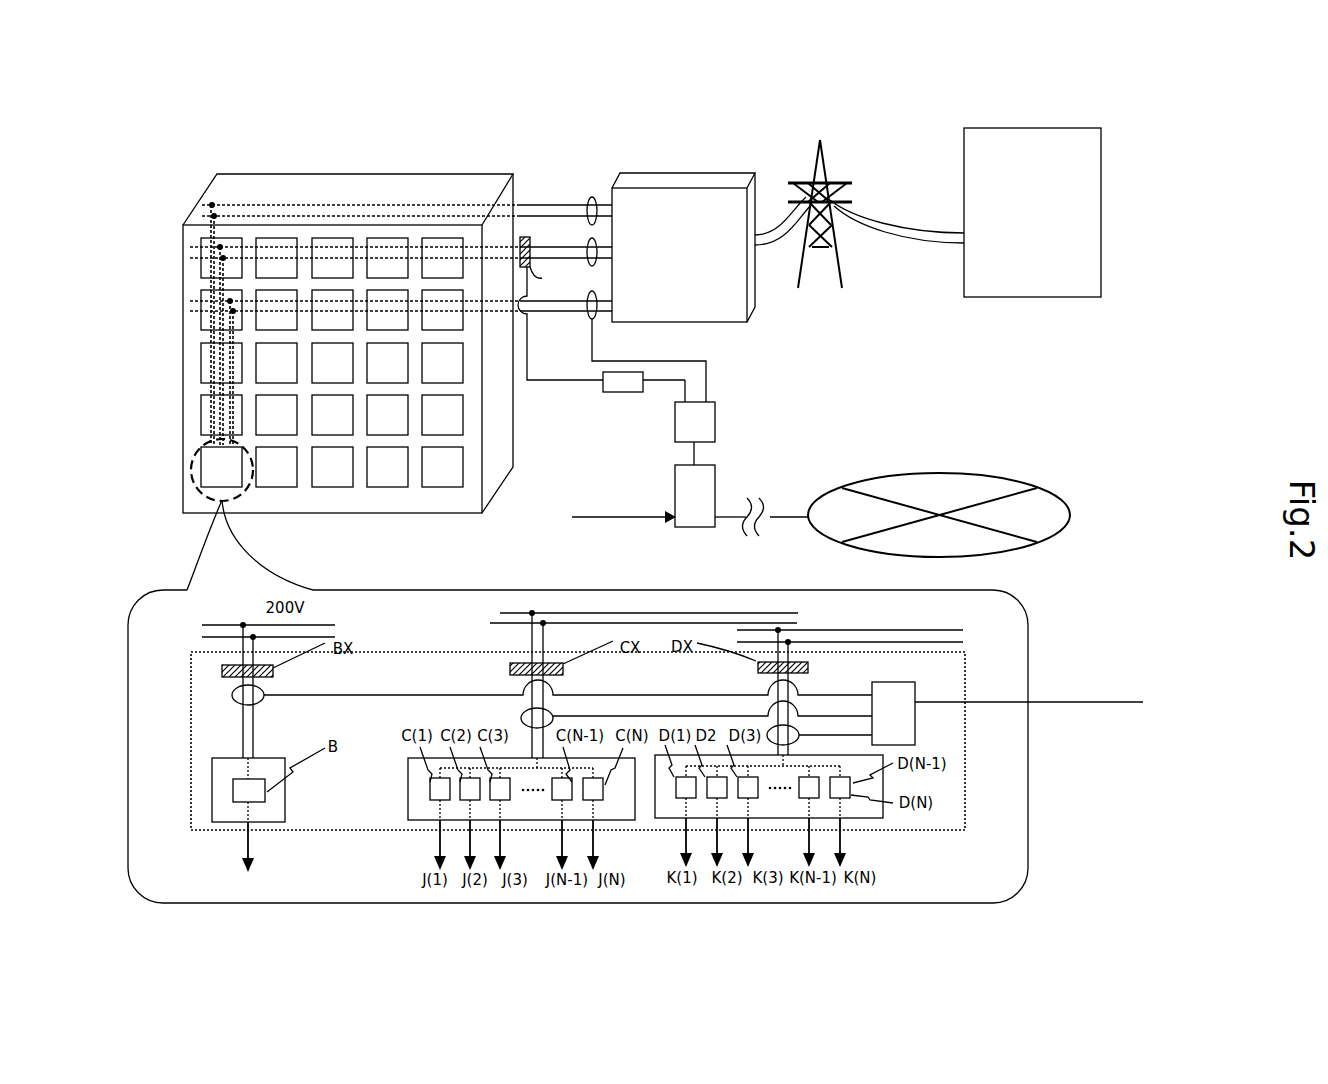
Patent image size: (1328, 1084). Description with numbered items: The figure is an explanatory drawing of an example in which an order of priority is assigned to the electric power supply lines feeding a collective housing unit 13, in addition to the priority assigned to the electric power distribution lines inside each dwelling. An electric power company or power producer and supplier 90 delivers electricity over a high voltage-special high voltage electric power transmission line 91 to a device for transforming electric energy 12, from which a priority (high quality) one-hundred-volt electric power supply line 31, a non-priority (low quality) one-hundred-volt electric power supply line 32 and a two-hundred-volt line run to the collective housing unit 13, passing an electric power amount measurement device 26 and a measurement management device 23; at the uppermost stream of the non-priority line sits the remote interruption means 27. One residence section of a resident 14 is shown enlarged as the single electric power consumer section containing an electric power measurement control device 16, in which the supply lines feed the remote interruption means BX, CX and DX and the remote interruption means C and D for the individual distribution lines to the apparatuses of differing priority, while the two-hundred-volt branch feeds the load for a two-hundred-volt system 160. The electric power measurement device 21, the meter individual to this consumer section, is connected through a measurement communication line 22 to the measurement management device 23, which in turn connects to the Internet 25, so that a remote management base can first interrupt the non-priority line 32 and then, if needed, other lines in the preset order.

The device for transforming electric energy 12 is at (683, 231).
The collective housing unit 13 is at (300, 174).
The residence section of a resident 14 is at (187, 511).
The electric power measurement control device 16 is at (554, 741).
The electric power measurement device 21 is at (916, 692).
The measurement communication line 22 is at (854, 590).
The measurement management device 23 is at (722, 477).
The Internet (wide area network) 25 is at (939, 484).
The electric power amount measurement device 26 is at (727, 413).
The remote interruption means for a non-priority 100 V electric power supply line at 27 is at (610, 403).
The priority (high quality) 100 V electric power supply line 31 is at (553, 612).
The non-priority (low quality) 100 V electric power supply line 32 is at (540, 247).
The electric power company or power producer and supplier (PPS) 90 is at (1032, 197).
The high voltage-special high voltage electric power transmission line 91 is at (859, 265).
The load for a 200 V system 160 is at (247, 860).